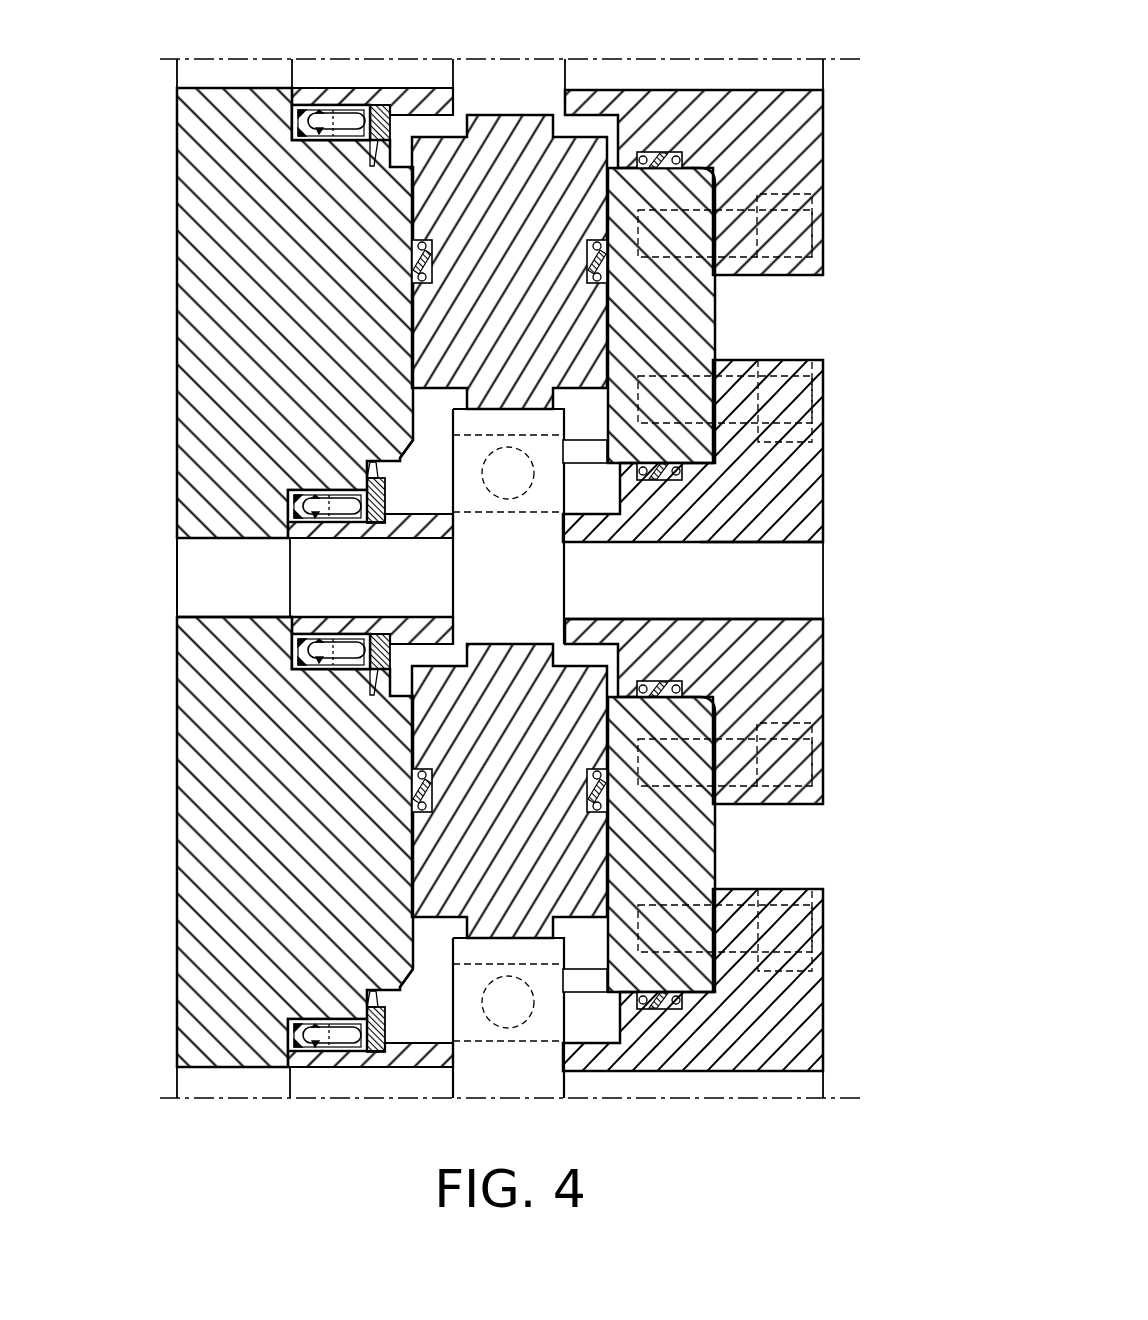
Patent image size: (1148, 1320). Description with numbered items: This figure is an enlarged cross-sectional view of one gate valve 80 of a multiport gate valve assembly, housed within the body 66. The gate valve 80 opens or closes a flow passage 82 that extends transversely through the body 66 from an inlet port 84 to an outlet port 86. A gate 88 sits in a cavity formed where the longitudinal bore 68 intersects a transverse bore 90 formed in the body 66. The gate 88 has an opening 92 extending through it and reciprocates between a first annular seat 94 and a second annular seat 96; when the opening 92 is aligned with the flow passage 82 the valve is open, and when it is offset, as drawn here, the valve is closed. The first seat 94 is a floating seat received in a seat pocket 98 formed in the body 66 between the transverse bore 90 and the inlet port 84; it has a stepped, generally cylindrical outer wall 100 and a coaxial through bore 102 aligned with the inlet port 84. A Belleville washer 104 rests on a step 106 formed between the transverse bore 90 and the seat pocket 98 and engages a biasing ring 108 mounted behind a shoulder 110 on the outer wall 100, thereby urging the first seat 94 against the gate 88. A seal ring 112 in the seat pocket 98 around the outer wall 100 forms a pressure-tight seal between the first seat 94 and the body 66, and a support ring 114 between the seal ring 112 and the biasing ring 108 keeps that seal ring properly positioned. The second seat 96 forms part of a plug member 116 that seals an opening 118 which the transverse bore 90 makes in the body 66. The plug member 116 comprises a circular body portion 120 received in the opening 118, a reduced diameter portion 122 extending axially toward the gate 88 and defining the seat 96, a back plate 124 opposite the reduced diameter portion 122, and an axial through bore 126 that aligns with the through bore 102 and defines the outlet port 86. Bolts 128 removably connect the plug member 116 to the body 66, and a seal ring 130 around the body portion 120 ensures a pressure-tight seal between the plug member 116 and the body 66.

The body 66 is at (178, 150).
The longitudinal bore 68 is at (412, 370).
The gate valve 80 is at (277, 685).
The flow passage 82 is at (178, 578).
The inlet port 84 is at (182, 612).
The outlet port 86 is at (800, 620).
The gate 88 is at (565, 572).
The transverse bore 90 is at (380, 472).
The opening 92 is at (492, 498).
The first annular seat 94 is at (416, 512).
The second annular seat 96 is at (597, 512).
The seat pocket 98 is at (300, 505).
The outer wall 100 is at (420, 90).
The through bore 102 is at (290, 625).
The Belleville washer 104 is at (430, 692).
The step 106 is at (352, 690).
The biasing ring 108 is at (381, 105).
The shoulder 110 is at (360, 628).
The seal ring 112 is at (310, 110).
The support ring 114 is at (357, 108).
The plug member 116 is at (825, 528).
The opening 118 is at (692, 690).
The circular body portion 120 is at (692, 462).
The reduced diameter portion 122 is at (620, 628).
The back plate 124 is at (793, 808).
The axial through bore 126 is at (790, 543).
The bolts 128 is at (812, 756).
The seal ring 130 is at (713, 364).